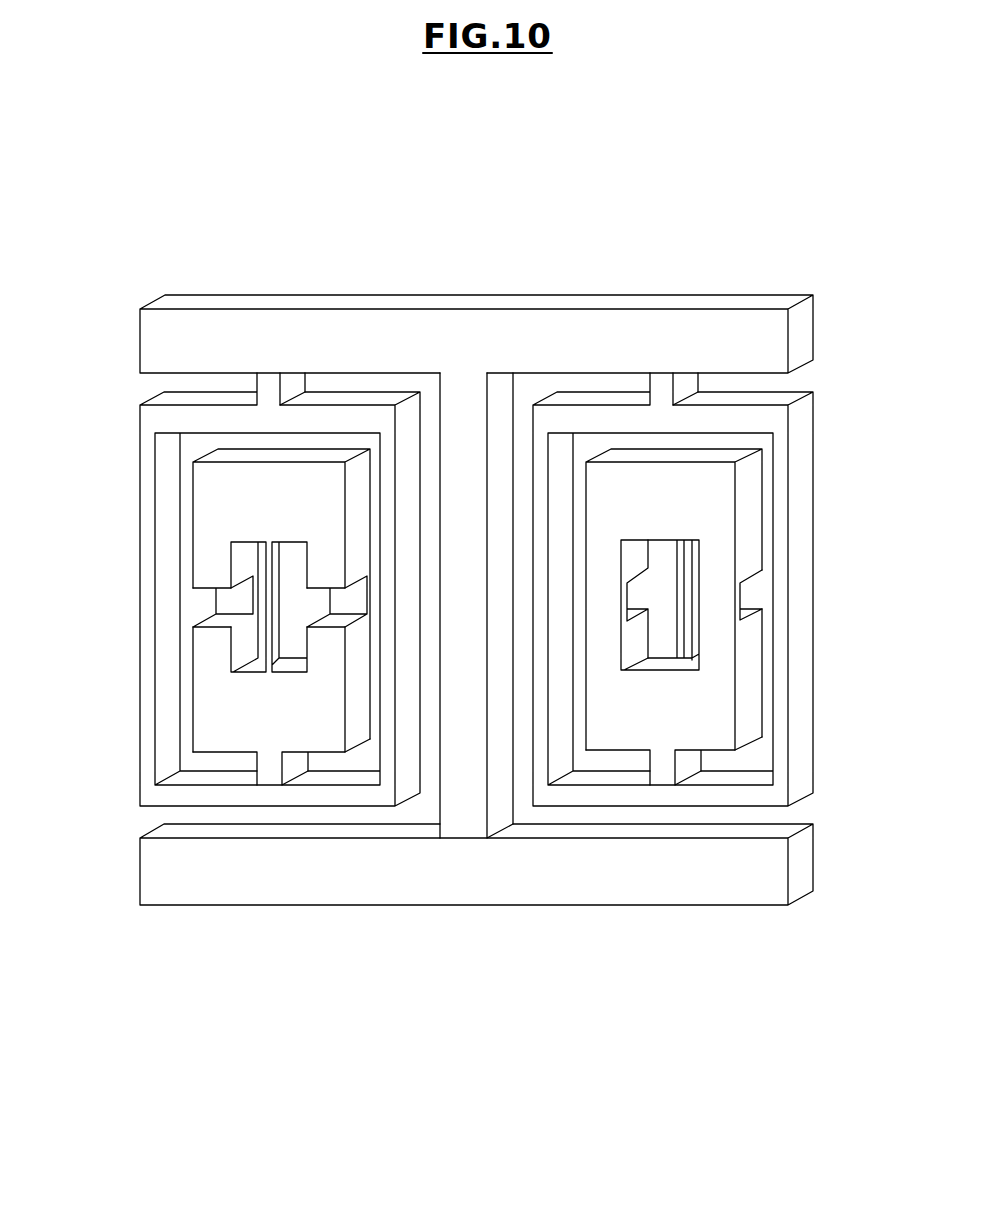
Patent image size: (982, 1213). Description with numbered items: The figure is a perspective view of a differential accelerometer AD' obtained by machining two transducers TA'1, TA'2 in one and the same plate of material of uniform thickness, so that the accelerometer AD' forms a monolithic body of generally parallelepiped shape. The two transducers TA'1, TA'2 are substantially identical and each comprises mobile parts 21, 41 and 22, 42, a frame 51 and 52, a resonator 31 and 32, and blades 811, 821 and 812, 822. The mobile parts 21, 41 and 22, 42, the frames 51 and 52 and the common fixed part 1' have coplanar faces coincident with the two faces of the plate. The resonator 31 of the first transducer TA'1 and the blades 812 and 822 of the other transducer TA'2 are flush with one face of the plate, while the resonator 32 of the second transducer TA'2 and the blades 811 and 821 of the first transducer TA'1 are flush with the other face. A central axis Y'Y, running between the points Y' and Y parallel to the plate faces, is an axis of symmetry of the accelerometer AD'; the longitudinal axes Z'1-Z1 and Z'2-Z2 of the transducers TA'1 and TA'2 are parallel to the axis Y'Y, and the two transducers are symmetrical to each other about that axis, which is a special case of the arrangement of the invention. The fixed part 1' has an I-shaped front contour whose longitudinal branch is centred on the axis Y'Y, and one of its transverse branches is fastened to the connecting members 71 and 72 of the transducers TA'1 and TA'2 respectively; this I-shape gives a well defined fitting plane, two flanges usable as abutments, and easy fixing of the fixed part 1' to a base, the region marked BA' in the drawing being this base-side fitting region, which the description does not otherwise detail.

The fixed part 1' is at (476, 291).
The connecting member 71 is at (292, 386).
The connecting member 72 is at (682, 386).
The mobile part 21 is at (200, 516).
The mobile part 22 is at (720, 499).
The resonator 31 is at (285, 578).
The resonator 32 is at (678, 574).
The mobile part 41 is at (215, 727).
The mobile part 42 is at (752, 715).
The frame 51 is at (125, 703).
The frame 52 is at (823, 703).
The blade 811 is at (215, 606).
The blade 812 is at (748, 598).
The blade 821 is at (328, 602).
The blade 822 is at (628, 600).
The differential accelerometer AD' is at (149, 123).
The base BA' is at (572, 157).
The transducer TA'1 is at (86, 441).
The transducer TA'2 is at (864, 404).
The central axis Y is at (457, 222).
The central axis Y' is at (460, 977).
The longitudinal axis Z1 is at (275, 293).
The longitudinal axis Z2 is at (668, 293).
The longitudinal axis Z'1 is at (260, 958).
The longitudinal axis Z'2 is at (650, 960).